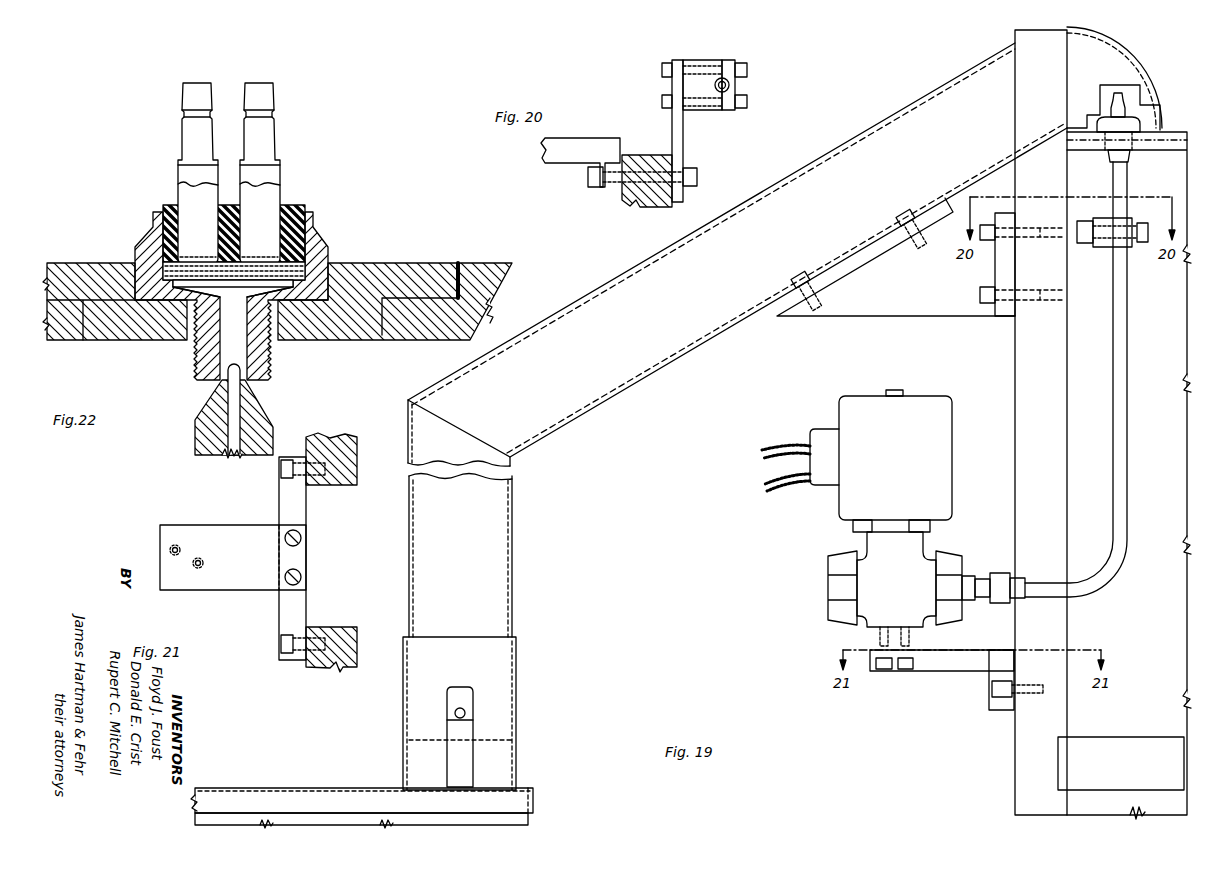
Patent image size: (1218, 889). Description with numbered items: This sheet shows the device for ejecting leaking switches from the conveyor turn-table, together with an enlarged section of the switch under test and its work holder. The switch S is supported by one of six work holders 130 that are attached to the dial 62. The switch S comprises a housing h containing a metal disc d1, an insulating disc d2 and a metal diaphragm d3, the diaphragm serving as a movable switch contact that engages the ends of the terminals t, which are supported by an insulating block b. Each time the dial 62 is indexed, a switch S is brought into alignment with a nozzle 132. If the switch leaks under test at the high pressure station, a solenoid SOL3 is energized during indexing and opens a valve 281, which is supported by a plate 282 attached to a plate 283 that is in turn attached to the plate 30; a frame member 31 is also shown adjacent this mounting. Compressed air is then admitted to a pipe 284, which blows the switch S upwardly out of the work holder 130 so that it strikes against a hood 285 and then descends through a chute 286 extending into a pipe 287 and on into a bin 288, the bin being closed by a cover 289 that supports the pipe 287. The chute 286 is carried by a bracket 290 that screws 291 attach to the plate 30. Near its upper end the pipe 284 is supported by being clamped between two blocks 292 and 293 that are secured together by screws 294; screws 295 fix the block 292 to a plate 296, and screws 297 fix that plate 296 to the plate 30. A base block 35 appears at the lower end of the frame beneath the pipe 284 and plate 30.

In FIG. 22, the work holder 130 is at (86, 266).
In FIG. 22, the dial 62 is at (509, 266).
In FIG. 22, the housing h is at (152, 218).
In FIG. 22, the switch S is at (224, 166).
In FIG. 19, the switch S is at (1135, 124).
In FIG. 22, the insulating block b is at (285, 210).
In FIG. 22, the terminals t is at (190, 86).
In FIG. 22, the metal diaphragm d3 is at (243, 266).
In FIG. 22, the insulating disc d2 is at (300, 262).
In FIG. 22, the metal disc d1 is at (238, 292).
In FIG. 22, the nozzle 132 is at (268, 418).
In FIG. 21, the plate 30 is at (340, 487).
In FIG. 20, the plate 30 is at (636, 203).
In FIG. 19, the plate 30 is at (1176, 134).
In FIG. 21, the frame member 31 is at (340, 630).
In FIG. 21, the plate 282 is at (238, 591).
In FIG. 19, the plate 282 is at (946, 672).
In FIG. 21, the plate 283 is at (283, 630).
In FIG. 19, the plate 283 is at (1000, 712).
In FIG. 20, the plate 296 is at (684, 154).
In FIG. 19, the plate 296 is at (1092, 248).
In FIG. 20, the block 292 is at (693, 112).
In FIG. 20, the block 293 is at (740, 111).
In FIG. 20, the pipe 284 is at (730, 85).
In FIG. 19, the pipe 284 is at (1127, 420).
In FIG. 20, the screws 294 is at (747, 70).
In FIG. 20, the screws 295 is at (658, 83).
In FIG. 20, the screws 297 is at (698, 178).
In FIG. 19, the screws 297 is at (1097, 222).
In FIG. 19, the hood 285 is at (1130, 42).
In FIG. 19, the chute 286 is at (712, 352).
In FIG. 19, the bracket 290 is at (914, 318).
In FIG. 19, the screws 291 is at (1021, 242).
In FIG. 19, the solenoid SOL3 is at (953, 475).
In FIG. 19, the valve 281 is at (866, 546).
In FIG. 19, the base block 35 is at (1118, 738).
In FIG. 19, the pipe 287 is at (516, 722).
In FIG. 19, the cover 289 is at (533, 790).
In FIG. 19, the bin 288 is at (528, 820).